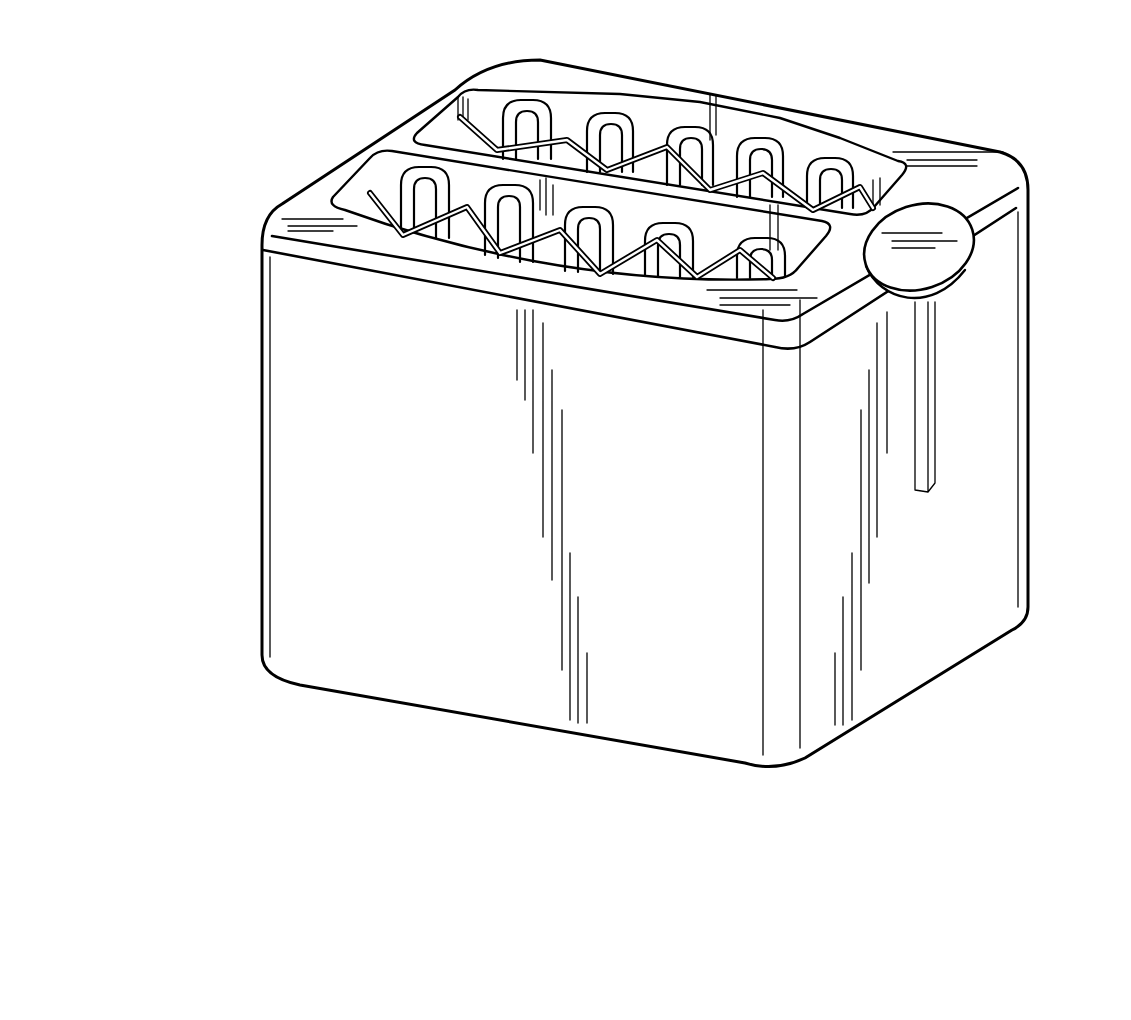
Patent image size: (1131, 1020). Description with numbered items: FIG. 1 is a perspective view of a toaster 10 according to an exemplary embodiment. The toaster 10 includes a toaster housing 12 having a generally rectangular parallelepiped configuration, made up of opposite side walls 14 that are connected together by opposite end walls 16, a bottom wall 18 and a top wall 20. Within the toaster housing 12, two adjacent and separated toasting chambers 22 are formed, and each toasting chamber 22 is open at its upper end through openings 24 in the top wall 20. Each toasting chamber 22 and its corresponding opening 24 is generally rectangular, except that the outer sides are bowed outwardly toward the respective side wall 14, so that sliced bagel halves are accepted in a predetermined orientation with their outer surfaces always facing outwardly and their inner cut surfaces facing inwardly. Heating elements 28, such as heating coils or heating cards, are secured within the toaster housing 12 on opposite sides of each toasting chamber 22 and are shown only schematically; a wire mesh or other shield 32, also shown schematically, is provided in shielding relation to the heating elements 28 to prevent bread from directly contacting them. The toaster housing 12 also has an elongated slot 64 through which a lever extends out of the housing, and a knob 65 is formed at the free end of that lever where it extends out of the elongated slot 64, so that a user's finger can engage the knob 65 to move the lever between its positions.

The toaster 10 is at (164, 144).
The toaster housing 12 is at (315, 454).
The side walls 14 is at (508, 683).
The end walls 16 is at (1029, 522).
The bottom wall 18 is at (620, 743).
The top wall 20 is at (332, 170).
The toasting chambers 22 is at (356, 156).
The openings 24 is at (360, 212).
The heating elements 28 is at (427, 165).
The shield 32 is at (477, 124).
The elongated slot 64 is at (936, 392).
The knob 65 is at (957, 237).